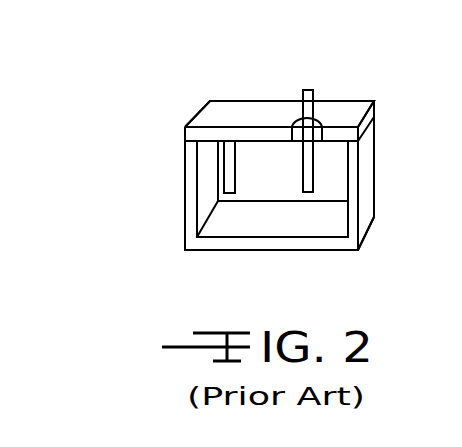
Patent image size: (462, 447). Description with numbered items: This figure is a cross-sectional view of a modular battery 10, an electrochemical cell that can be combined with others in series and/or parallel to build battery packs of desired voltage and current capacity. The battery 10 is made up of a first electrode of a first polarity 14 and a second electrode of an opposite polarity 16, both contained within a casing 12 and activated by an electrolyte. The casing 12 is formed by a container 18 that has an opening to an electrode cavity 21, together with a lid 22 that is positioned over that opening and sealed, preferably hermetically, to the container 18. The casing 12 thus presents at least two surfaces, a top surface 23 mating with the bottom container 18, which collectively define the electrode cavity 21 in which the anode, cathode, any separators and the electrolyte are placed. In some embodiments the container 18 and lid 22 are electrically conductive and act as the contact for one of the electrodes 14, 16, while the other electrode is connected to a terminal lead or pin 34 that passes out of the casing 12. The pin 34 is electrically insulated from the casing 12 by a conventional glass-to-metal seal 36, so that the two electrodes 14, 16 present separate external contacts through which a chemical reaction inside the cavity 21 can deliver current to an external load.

The modular battery 10 is at (392, 138).
The casing 12 is at (174, 193).
The first electrode of a first polarity 14 is at (313, 177).
The second electrode of a second polarity 16 is at (237, 163).
The container 18 is at (371, 224).
The electrode cavity 21 is at (280, 193).
The lid 22 is at (257, 101).
The top surface 23 is at (200, 126).
The terminal lead or pin 34 is at (309, 90).
The glass-to-metal seal 36 is at (318, 121).